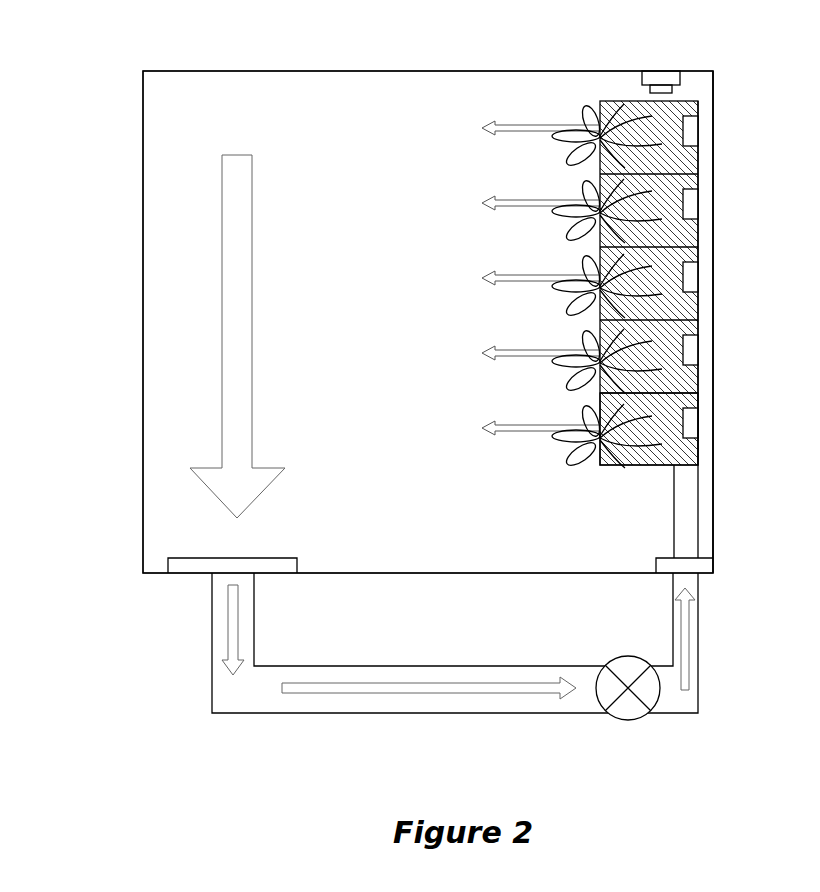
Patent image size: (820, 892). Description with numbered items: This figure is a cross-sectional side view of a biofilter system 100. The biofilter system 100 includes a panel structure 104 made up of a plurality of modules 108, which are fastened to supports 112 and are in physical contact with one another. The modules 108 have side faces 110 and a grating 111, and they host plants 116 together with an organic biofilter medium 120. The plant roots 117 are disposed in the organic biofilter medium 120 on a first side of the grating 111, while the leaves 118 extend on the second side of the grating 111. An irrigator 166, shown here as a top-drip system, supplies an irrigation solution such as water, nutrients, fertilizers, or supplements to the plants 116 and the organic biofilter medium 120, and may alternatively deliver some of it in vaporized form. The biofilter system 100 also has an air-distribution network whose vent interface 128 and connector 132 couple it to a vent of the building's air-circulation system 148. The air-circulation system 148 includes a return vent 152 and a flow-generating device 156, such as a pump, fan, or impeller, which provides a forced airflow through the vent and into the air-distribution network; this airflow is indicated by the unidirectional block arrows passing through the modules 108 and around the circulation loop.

The biofilter system 100 is at (122, 74).
The panel structure 104 is at (557, 98).
The irrigator 166 is at (653, 70).
The organic biofilter medium 120 is at (620, 100).
The supports 112 is at (735, 105).
The plant roots 117 is at (700, 306).
The side faces 110 is at (700, 457).
The plants 116 is at (560, 158).
The leaves 118 is at (555, 232).
The modules 108 is at (578, 312).
The grating 111 is at (578, 455).
The connector 132 is at (665, 482).
The vent interface 128 is at (730, 550).
The return vent 152 is at (178, 577).
The air-circulation system 148 is at (193, 686).
The flow-generating device 156 is at (603, 660).